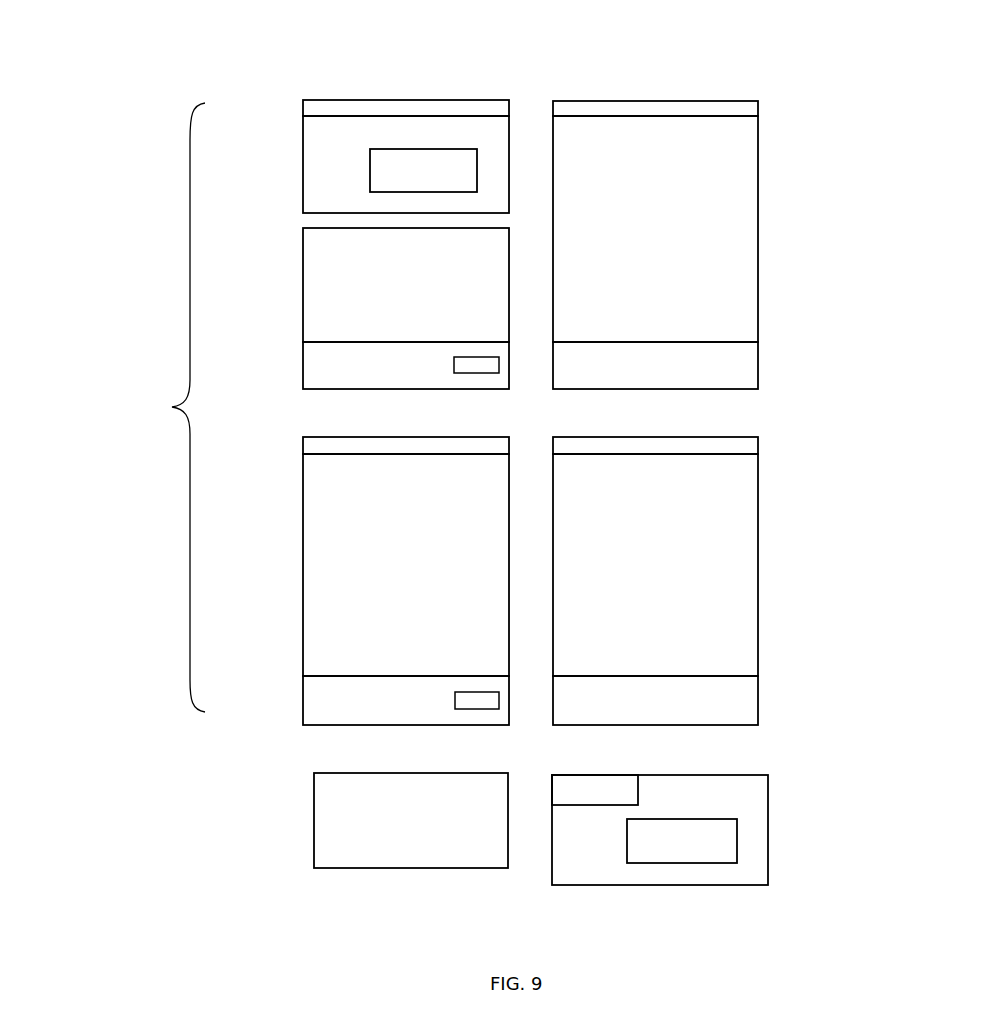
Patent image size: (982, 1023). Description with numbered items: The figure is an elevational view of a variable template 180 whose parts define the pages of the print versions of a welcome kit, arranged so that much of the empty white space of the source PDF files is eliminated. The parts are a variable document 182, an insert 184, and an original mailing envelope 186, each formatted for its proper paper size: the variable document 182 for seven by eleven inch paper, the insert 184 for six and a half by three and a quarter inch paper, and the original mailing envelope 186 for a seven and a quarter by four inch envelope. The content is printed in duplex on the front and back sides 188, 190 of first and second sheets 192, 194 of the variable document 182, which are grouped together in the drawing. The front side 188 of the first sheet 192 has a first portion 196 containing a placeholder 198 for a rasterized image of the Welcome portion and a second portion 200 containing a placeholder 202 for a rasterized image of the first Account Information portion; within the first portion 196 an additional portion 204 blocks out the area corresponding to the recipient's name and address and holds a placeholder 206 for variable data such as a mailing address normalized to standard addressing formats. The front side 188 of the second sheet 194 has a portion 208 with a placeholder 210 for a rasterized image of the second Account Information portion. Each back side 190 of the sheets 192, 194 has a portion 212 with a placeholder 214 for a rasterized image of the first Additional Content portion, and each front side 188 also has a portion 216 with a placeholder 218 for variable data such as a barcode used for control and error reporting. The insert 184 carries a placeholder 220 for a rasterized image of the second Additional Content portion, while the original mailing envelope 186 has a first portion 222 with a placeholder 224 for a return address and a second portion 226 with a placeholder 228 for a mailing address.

The variable template 180 is at (190, 48).
The variable document 182 is at (164, 408).
The insert 184 is at (314, 842).
The original mailing envelope 186 is at (770, 804).
The front side 188 is at (303, 365).
The back side 190 is at (760, 364).
The first sheet 192 is at (303, 111).
The second sheet 194 is at (303, 445).
The first portion 196 is at (303, 187).
The placeholder 198 is at (392, 133).
The second portion 200 is at (303, 315).
The placeholder 202 is at (317, 250).
The additional portion 204 is at (430, 149).
The placeholder 206 is at (438, 185).
The portion 208 is at (303, 580).
The placeholder 210 is at (318, 472).
The portion 212 is at (760, 222).
The placeholder 214 is at (638, 128).
The portion 216 is at (487, 375).
The placeholder 218 is at (492, 363).
The placeholder 220 is at (331, 791).
The first portion 222 is at (553, 805).
The placeholder 224 is at (556, 786).
The second portion 226 is at (690, 864).
The placeholder 228 is at (700, 851).